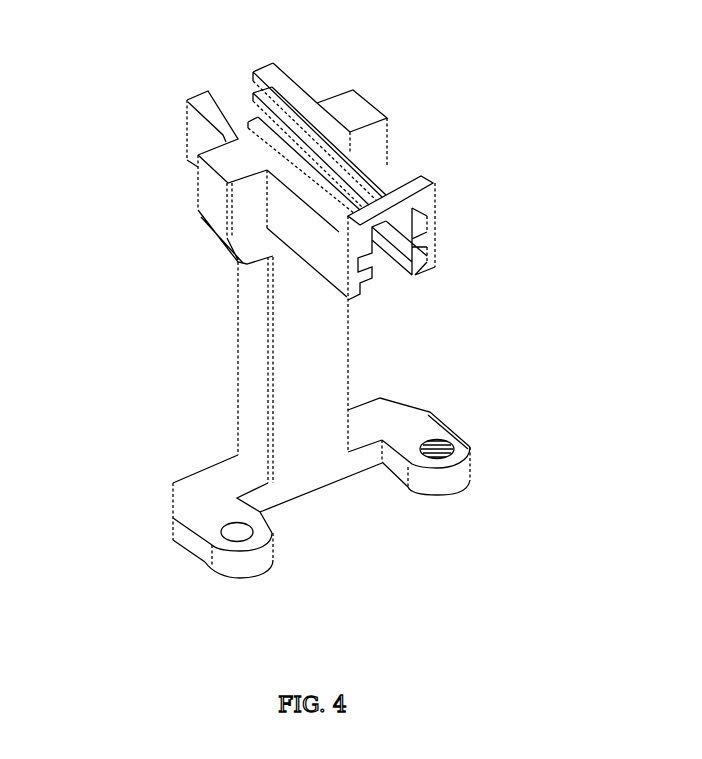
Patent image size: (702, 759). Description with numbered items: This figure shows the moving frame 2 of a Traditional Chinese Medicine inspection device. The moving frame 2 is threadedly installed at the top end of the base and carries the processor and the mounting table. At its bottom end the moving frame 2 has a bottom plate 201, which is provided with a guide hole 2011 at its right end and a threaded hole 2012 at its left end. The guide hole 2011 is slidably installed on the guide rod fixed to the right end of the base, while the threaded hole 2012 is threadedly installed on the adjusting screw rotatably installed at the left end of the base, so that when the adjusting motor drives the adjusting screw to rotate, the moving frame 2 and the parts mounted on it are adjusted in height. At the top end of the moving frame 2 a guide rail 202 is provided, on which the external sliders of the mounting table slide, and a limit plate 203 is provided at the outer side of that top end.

The moving frame 2 is at (237, 342).
The bottom plate 201 is at (172, 522).
The guide hole 2011 is at (233, 543).
The threaded hole 2012 is at (424, 458).
The guide rail 202 is at (271, 112).
The limit plate 203 is at (430, 191).